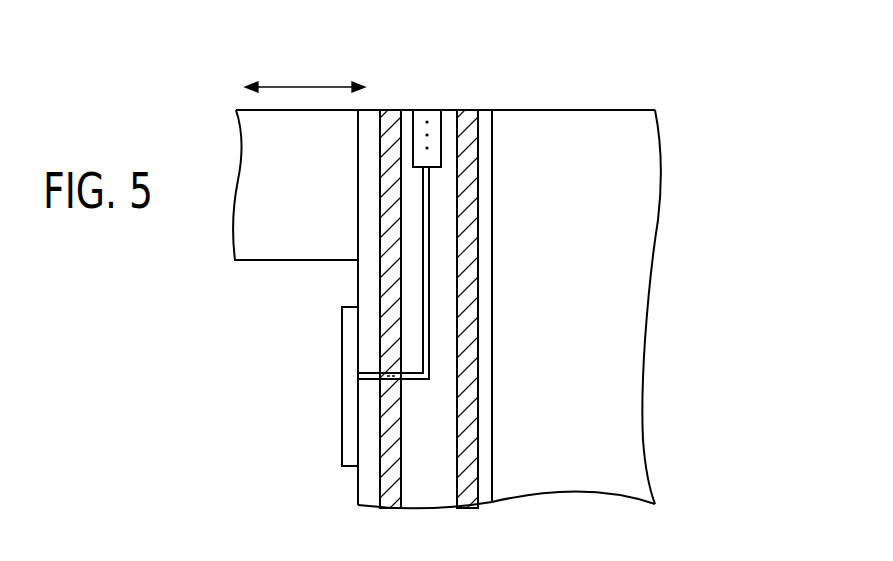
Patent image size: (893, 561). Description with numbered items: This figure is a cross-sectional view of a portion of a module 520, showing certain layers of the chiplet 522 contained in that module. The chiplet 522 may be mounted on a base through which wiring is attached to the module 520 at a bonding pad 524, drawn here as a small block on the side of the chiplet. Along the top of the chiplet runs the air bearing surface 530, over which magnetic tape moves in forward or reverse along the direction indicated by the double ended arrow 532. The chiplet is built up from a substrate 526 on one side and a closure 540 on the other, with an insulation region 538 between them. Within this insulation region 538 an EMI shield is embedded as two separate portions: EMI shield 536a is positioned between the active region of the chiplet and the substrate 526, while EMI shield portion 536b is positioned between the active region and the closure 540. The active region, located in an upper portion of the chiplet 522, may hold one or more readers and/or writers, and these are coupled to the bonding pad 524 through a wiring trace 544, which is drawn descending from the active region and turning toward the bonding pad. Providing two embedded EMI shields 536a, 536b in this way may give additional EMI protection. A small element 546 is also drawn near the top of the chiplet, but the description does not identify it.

The module 520 is at (698, 109).
The chiplet 522 is at (661, 213).
The bonding pad 524 is at (350, 428).
The substrate 526 is at (595, 200).
The air bearing surface 530 is at (532, 108).
The double ended arrow 532 is at (307, 83).
The EMI shield 536a is at (465, 125).
The EMI shield portion 536b is at (390, 125).
The insulation region 538 is at (451, 473).
The closure 540 is at (316, 200).
The wiring trace 544 is at (423, 308).
The sensor element 546 is at (427, 110).